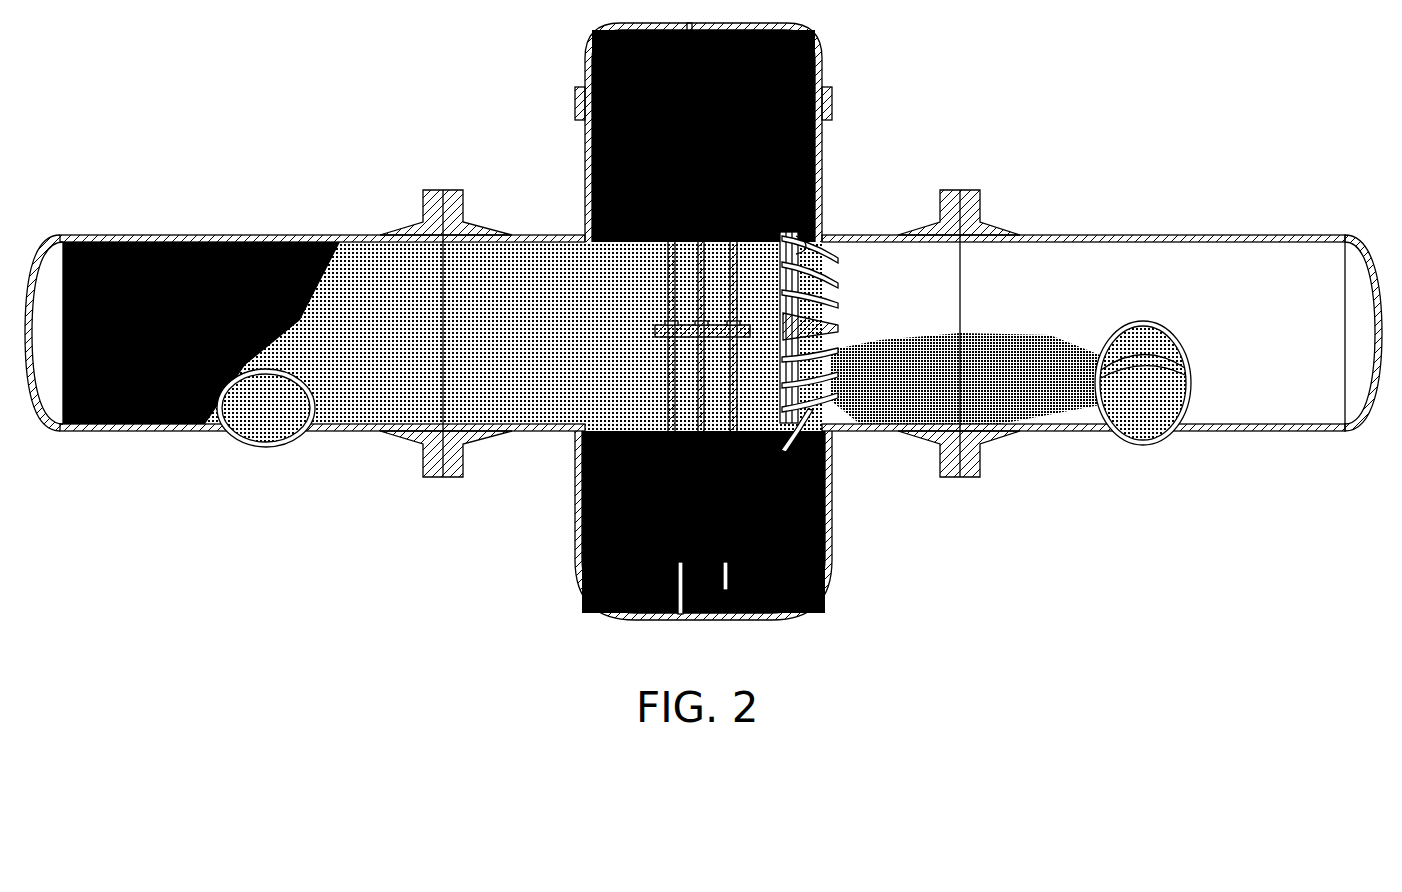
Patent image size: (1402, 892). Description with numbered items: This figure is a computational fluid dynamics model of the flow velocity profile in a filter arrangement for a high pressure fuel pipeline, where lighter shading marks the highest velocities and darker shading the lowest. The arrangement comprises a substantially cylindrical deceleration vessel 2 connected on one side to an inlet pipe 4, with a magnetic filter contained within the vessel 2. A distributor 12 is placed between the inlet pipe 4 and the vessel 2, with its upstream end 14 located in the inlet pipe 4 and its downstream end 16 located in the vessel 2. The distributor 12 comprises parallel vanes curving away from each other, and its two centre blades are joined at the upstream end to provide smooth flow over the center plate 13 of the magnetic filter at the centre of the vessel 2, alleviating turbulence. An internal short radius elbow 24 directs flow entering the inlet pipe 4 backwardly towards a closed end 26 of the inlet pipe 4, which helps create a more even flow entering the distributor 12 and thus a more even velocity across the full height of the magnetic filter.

The deceleration vessel 2 is at (831, 532).
The inlet pipe 4 is at (883, 430).
The distributor 12 is at (808, 252).
The center plate 13 is at (700, 340).
The upstream end 14 is at (840, 303).
The downstream end 16 is at (777, 286).
The internal short radius elbow 24 is at (1158, 324).
The closed end 26 is at (1371, 251).